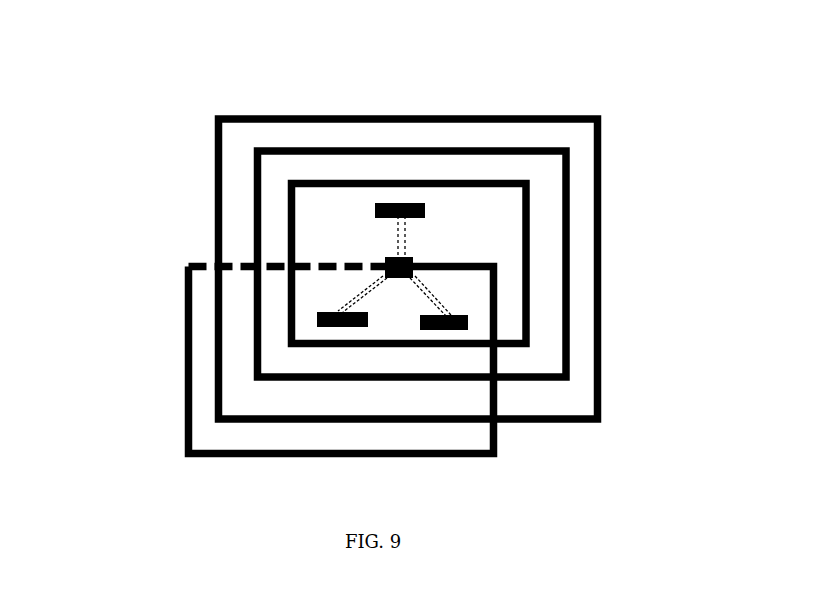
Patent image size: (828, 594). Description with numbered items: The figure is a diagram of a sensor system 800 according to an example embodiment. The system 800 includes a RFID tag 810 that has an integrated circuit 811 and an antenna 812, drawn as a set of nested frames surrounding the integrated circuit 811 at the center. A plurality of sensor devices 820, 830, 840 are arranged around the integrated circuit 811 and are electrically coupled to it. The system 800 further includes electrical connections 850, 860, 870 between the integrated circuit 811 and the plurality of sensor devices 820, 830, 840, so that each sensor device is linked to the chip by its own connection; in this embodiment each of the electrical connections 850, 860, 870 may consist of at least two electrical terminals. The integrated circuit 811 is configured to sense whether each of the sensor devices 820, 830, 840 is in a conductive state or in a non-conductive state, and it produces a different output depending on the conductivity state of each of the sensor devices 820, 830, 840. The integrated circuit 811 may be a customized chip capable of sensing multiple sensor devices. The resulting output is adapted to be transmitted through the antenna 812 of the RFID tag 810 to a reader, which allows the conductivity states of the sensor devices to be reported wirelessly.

The system 800 is at (630, 50).
The RFID tag 810 is at (600, 118).
The antenna 812 is at (602, 172).
The integrated circuit 811 is at (413, 262).
The sensor device 820 is at (378, 212).
The electrical connection 850 is at (390, 247).
The electrical connection 860 is at (343, 300).
The electrical connection 870 is at (435, 298).
The sensor device 830 is at (314, 319).
The sensor device 840 is at (470, 322).